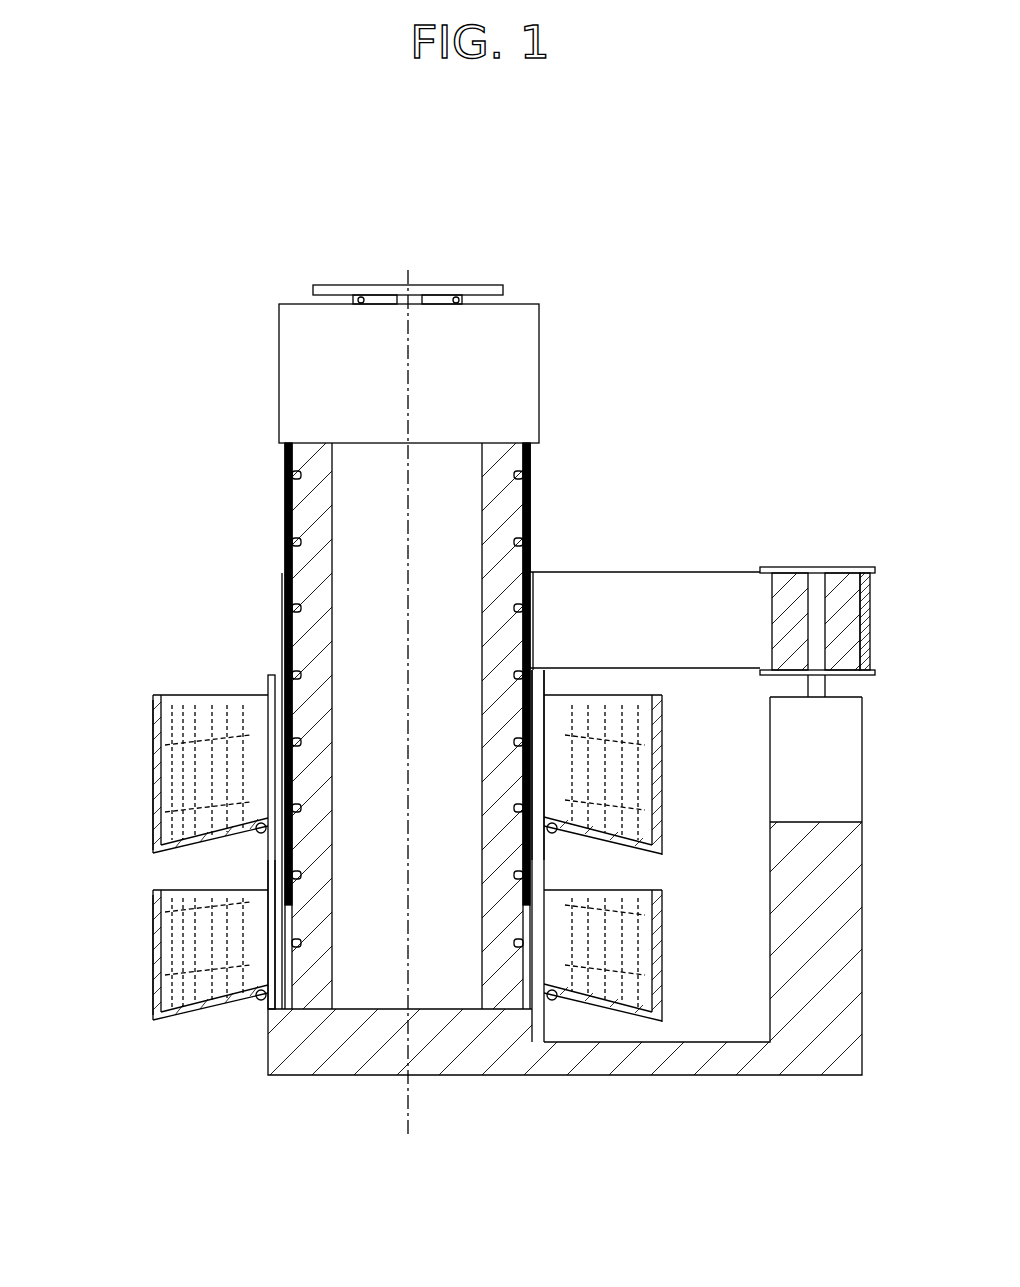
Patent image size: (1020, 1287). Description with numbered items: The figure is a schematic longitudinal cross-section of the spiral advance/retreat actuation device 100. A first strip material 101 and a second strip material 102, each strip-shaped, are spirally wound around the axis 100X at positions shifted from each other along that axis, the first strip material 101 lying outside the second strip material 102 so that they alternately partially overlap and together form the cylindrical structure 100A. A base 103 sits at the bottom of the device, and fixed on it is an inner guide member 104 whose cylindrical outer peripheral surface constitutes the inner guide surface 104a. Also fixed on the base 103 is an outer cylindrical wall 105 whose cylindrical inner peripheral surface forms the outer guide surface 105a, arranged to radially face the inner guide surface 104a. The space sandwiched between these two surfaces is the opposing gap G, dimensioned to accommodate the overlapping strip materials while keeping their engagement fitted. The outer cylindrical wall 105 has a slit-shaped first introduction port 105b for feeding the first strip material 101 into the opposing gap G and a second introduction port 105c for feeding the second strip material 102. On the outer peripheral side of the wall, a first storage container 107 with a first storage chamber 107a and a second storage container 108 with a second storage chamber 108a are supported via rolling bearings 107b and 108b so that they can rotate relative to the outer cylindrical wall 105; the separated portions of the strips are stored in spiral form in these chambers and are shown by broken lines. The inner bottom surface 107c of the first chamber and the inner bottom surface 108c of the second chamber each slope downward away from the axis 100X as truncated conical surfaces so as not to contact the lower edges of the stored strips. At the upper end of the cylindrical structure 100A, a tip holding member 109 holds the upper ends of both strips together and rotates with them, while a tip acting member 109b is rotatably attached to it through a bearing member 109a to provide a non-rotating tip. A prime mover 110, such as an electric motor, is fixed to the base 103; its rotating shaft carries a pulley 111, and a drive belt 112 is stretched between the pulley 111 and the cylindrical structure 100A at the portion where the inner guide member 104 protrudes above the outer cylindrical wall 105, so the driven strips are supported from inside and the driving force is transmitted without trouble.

The spiral advance/retreat actuation device 100 is at (699, 233).
The cylindrical structure 100A is at (271, 498).
The axis 100X is at (405, 383).
The first strip material 101 is at (152, 782).
The second strip material 102 is at (150, 952).
The base 103 is at (432, 1063).
The inner guide member 104 is at (497, 1000).
The inner guide surface 104a is at (531, 510).
The outer cylindrical wall 105 is at (540, 918).
The outer guide surface 105a is at (290, 713).
The first introduction port 105b is at (543, 720).
The second introduction port 105c is at (275, 968).
The first storage container 107 is at (209, 740).
The first storage chamber 107a is at (203, 700).
The rolling bearing 107b is at (270, 830).
The inner bottom surface 107c is at (620, 828).
The second storage container 108 is at (217, 916).
The second storage chamber 108a is at (190, 907).
The rolling bearing 108b is at (270, 997).
The inner bottom surface 108c is at (615, 995).
The tip holding member 109 is at (540, 373).
The bearing member 109a is at (457, 287).
The tip acting member 109b is at (352, 285).
The prime mover 110 is at (852, 752).
The pulley 111 is at (843, 575).
The drive belt 112 is at (706, 592).
The opposing gap G is at (287, 1005).